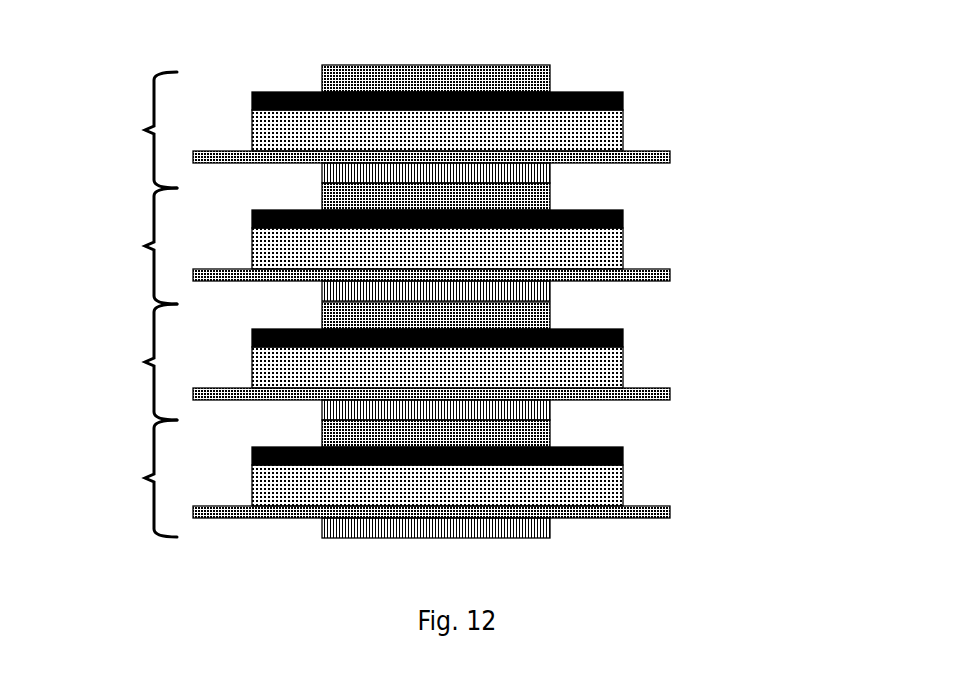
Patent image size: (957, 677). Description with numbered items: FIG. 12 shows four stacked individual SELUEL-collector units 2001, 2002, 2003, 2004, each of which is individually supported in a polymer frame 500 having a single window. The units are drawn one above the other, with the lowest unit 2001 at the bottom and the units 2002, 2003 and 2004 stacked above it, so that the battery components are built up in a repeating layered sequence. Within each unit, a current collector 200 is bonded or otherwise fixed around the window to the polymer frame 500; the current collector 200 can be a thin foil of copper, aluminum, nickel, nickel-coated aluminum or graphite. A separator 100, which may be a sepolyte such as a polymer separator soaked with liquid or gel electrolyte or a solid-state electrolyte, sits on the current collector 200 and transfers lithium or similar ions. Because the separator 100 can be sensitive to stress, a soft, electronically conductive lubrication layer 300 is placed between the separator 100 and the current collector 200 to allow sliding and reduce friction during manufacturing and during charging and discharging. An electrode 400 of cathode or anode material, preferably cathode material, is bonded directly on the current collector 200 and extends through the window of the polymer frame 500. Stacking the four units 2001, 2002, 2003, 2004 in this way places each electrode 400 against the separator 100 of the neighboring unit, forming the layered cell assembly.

The separator 100 is at (553, 429).
The current collector foil 200 is at (627, 478).
The lubrication layer 300 is at (627, 450).
The electrode 400 is at (553, 529).
The polymer frame 500 is at (671, 513).
The SELUEL-collector unit 2001 is at (146, 478).
The SELUEL-collector unit 2002 is at (146, 362).
The SELUEL-collector unit 2003 is at (146, 246).
The SELUEL-collector unit 2004 is at (146, 130).